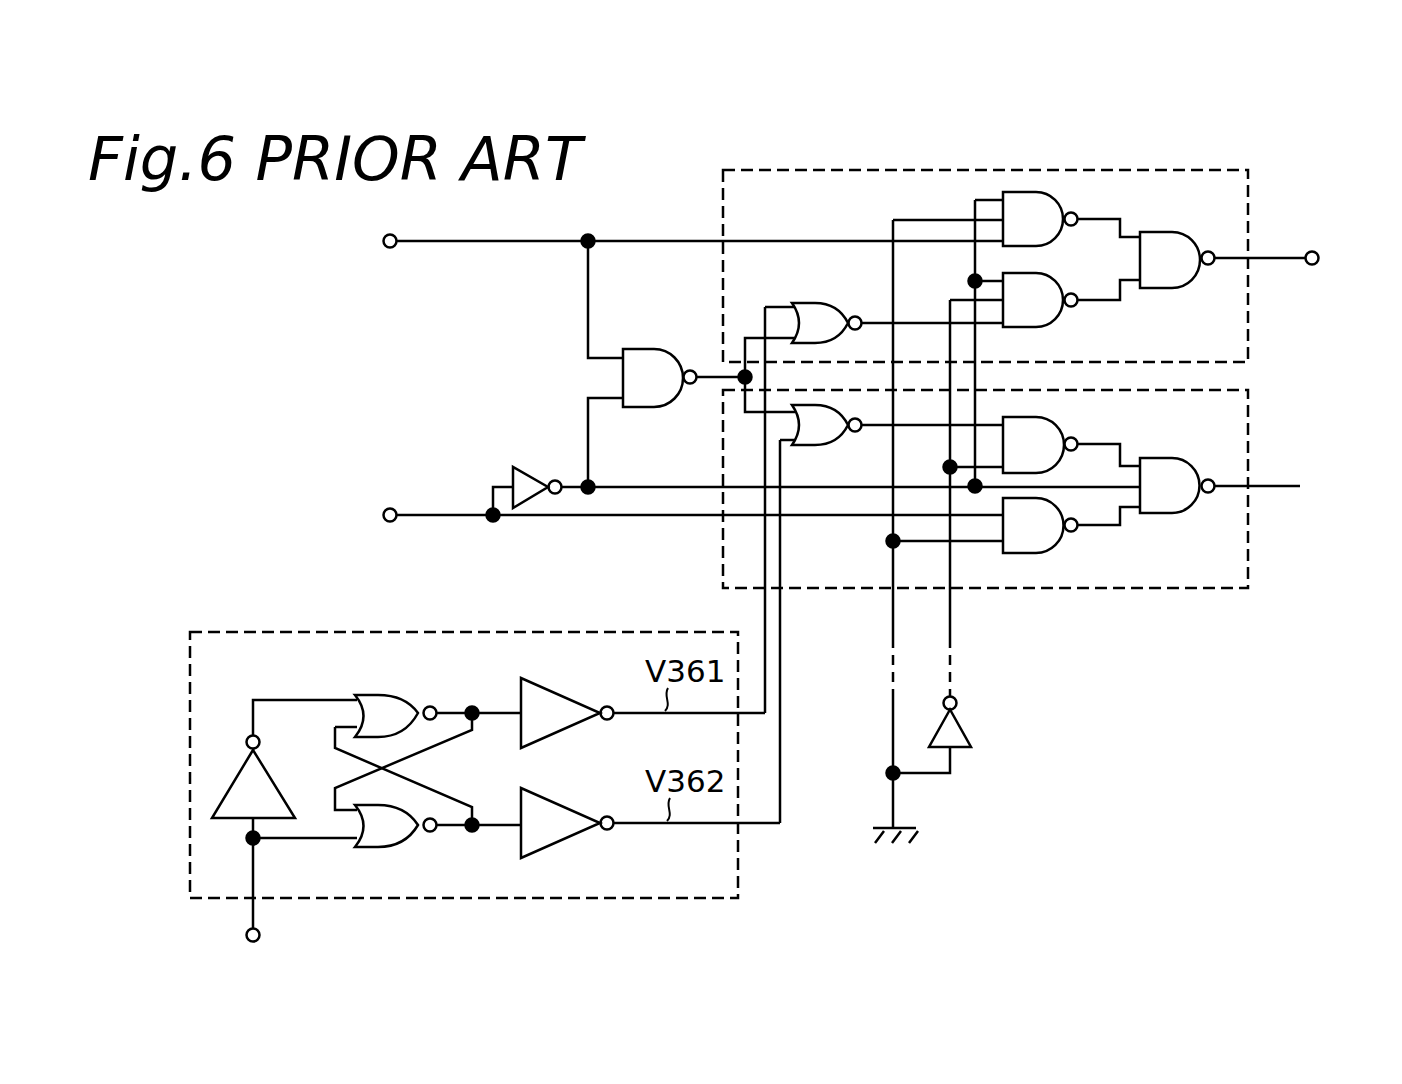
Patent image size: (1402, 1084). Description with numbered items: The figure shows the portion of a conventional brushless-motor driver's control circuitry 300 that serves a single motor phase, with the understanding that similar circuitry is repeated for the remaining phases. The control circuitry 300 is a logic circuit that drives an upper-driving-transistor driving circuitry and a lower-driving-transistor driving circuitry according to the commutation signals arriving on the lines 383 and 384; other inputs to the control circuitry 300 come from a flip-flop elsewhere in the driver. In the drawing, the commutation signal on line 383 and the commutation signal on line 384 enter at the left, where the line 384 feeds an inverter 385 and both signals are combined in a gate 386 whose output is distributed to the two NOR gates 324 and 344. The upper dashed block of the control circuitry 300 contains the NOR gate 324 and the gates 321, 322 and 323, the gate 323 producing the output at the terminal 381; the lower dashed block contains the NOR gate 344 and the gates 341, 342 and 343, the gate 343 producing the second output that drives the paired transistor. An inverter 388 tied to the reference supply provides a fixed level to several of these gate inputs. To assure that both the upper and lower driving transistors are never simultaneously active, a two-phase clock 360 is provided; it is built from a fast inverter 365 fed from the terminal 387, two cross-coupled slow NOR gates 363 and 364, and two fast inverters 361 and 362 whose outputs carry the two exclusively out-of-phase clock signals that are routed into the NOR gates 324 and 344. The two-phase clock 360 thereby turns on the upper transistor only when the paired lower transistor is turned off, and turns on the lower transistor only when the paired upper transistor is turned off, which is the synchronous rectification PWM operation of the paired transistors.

The control circuitry 300 is at (1225, 160).
The NAND gate 321 is at (1030, 247).
The NAND gate 322 is at (1030, 328).
The NAND gate 323 is at (1157, 232).
The NOR gate 324 is at (799, 303).
The NAND gate 341 is at (1030, 416).
The NAND gate 342 is at (1030, 554).
The NAND gate 343 is at (1157, 458).
The NOR gate 344 is at (810, 448).
The 2-phase clock 360 is at (262, 632).
The fast inverter 361 is at (558, 674).
The fast inverter 362 is at (545, 851).
The slow NOR gate 363 is at (373, 695).
The slow NOR gate 364 is at (372, 848).
The fast inverter 365 is at (272, 776).
The output terminal 381 is at (1317, 252).
The commutation signal line 383 is at (374, 241).
The commutation signal line 384 is at (374, 514).
The inverter 385 is at (524, 468).
The NAND gate 386 is at (650, 349).
The input terminal 387 is at (262, 935).
The inverter 388 is at (966, 733).